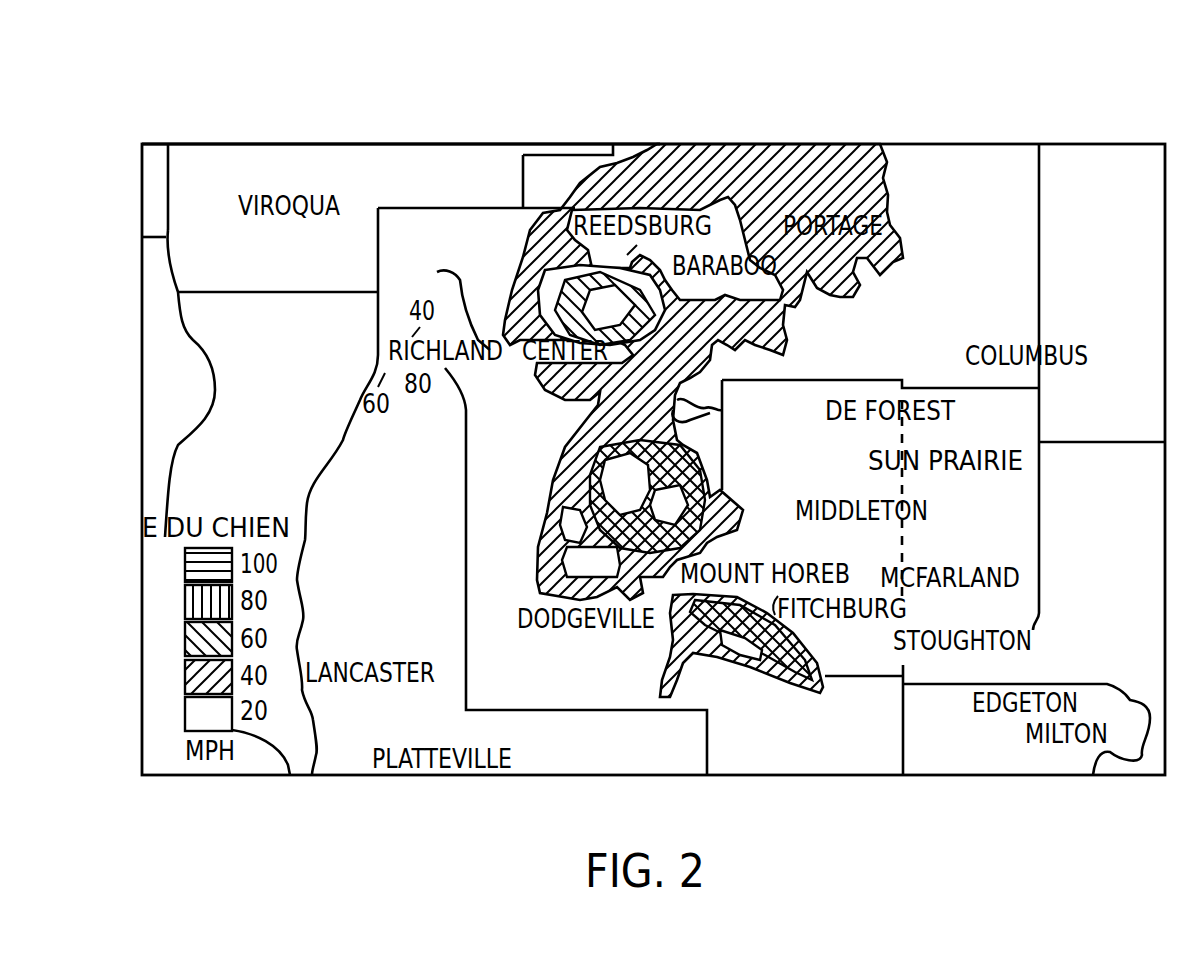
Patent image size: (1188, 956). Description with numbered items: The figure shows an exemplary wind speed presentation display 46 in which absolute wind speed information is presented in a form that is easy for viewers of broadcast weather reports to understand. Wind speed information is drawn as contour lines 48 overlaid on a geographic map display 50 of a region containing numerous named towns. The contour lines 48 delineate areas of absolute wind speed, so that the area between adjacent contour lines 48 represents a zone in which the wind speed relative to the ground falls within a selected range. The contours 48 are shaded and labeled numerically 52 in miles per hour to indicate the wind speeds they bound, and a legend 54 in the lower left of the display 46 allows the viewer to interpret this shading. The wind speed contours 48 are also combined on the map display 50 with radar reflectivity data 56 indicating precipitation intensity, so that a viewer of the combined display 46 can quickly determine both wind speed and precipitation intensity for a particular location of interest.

The wind speed presentation display 46 is at (967, 144).
The contour lines 48 is at (563, 195).
The geographic map display 50 is at (357, 158).
The numerical labels 52 is at (802, 312).
The legend 54 is at (290, 775).
The radar reflectivity data 56 is at (743, 692).